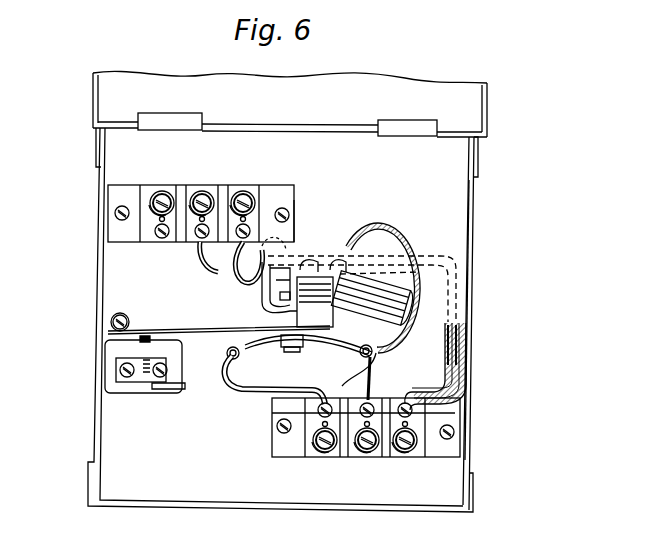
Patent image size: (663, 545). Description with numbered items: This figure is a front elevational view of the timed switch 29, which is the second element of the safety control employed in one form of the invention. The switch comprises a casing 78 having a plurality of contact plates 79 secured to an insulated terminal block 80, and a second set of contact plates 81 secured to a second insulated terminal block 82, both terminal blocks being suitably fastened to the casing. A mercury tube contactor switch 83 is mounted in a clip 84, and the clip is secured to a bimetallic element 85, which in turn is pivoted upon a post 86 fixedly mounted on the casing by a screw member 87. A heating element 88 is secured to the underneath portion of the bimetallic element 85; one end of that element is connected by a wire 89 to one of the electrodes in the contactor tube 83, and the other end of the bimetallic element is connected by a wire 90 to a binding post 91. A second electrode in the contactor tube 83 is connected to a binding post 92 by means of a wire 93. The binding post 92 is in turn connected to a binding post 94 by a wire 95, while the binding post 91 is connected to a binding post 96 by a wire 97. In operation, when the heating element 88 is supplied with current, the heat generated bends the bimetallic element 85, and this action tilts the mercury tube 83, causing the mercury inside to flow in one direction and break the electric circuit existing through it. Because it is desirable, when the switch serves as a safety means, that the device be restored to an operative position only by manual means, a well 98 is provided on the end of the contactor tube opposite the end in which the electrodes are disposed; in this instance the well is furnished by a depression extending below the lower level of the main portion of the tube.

The timed switch 29 is at (98, 194).
The casing 78 is at (461, 203).
The contact plates 79 is at (187, 197).
The insulated terminal block 80 is at (297, 240).
The second set of contact plates 81 is at (342, 388).
The insulated terminal block 82 is at (455, 441).
The mercury tube contactor switch 83 is at (373, 277).
The clip 84 is at (322, 276).
The bimetallic element 85 is at (192, 328).
The post 86 is at (125, 316).
The screw member 87 is at (110, 330).
The heating element 88 is at (284, 343).
The wire 89 is at (379, 226).
The wire 90 is at (234, 388).
The binding post 91 is at (272, 418).
The binding post 92 is at (294, 206).
The wire 93 is at (254, 276).
The binding post 94 is at (455, 413).
The wire 95 is at (466, 356).
The binding post 96 is at (199, 243).
The wire 97 is at (455, 338).
The well 98 is at (365, 314).